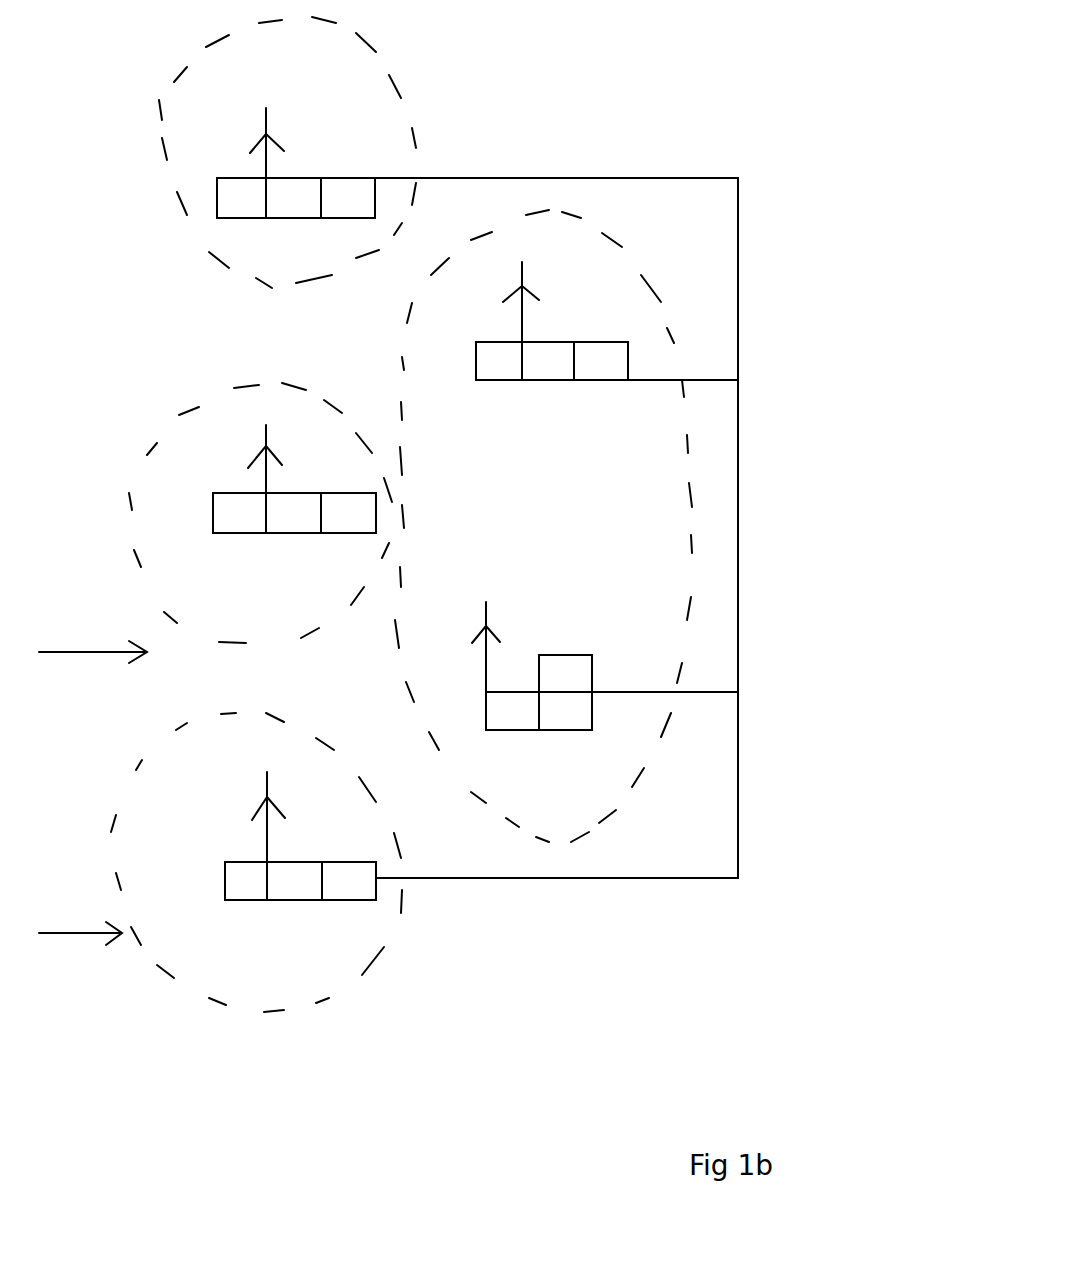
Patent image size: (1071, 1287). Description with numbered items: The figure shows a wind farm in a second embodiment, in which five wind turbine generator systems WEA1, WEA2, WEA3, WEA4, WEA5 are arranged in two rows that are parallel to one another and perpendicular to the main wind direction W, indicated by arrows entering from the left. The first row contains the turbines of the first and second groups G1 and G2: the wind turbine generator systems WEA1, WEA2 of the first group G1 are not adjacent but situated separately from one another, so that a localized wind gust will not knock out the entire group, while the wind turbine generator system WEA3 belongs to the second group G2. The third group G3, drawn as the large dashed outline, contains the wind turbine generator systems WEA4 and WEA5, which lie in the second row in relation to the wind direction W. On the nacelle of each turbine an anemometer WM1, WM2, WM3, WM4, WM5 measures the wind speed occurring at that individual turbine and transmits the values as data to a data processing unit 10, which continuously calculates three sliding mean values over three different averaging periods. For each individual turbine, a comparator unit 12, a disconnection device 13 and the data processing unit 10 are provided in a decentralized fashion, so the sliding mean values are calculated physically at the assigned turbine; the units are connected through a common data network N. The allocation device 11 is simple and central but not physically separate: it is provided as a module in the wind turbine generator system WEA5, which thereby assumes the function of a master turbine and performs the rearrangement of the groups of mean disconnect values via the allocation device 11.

The data processing unit 10 is at (367, 539).
The allocation device 11 is at (565, 673).
The comparator unit 12 is at (420, 539).
The disconnection device 13 is at (474, 539).
The first wind turbine generator system WEA1 is at (287, 152).
The second wind turbine generator system WEA2 is at (256, 862).
The third wind turbine generator system WEA3 is at (260, 513).
The fourth wind turbine generator system WEA4 is at (563, 271).
The fifth wind turbine generator system WEA5 is at (545, 603).
The anemometer WM1 is at (237, 163).
The anemometer WM2 is at (229, 833).
The anemometer WM3 is at (244, 474).
The anemometer WM4 is at (492, 321).
The anemometer WM5 is at (455, 662).
The first group G1 is at (404, 78).
The second group G2 is at (153, 427).
The third group G3 is at (698, 670).
The main wind direction W is at (132, 283).
The data network N is at (377, 530).